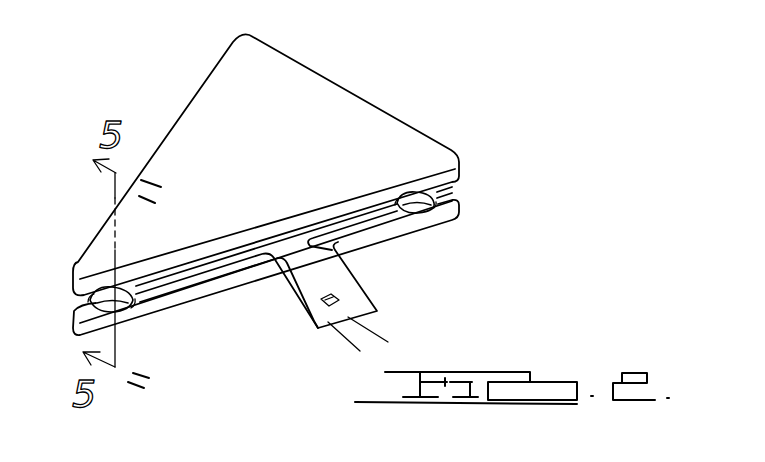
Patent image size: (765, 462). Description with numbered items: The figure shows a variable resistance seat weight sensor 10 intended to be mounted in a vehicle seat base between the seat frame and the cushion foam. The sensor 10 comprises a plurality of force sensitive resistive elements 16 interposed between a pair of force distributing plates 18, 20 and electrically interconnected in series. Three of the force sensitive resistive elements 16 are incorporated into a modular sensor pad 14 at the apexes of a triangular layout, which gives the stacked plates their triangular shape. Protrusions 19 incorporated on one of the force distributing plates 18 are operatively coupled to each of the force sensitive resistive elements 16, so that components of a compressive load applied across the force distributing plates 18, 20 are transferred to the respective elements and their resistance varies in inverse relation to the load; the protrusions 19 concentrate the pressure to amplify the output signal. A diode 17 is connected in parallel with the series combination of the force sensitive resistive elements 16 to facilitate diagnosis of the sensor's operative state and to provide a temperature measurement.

The variable resistance seat weight sensor 10 is at (158, 98).
The modular sensor pad 14 is at (236, 279).
The force sensitive resistive elements 16 is at (129, 307).
The diode 17 is at (331, 300).
The force distributing plate 18 is at (392, 113).
The protrusions 19 is at (107, 297).
The force distributing plate 20 is at (450, 209).